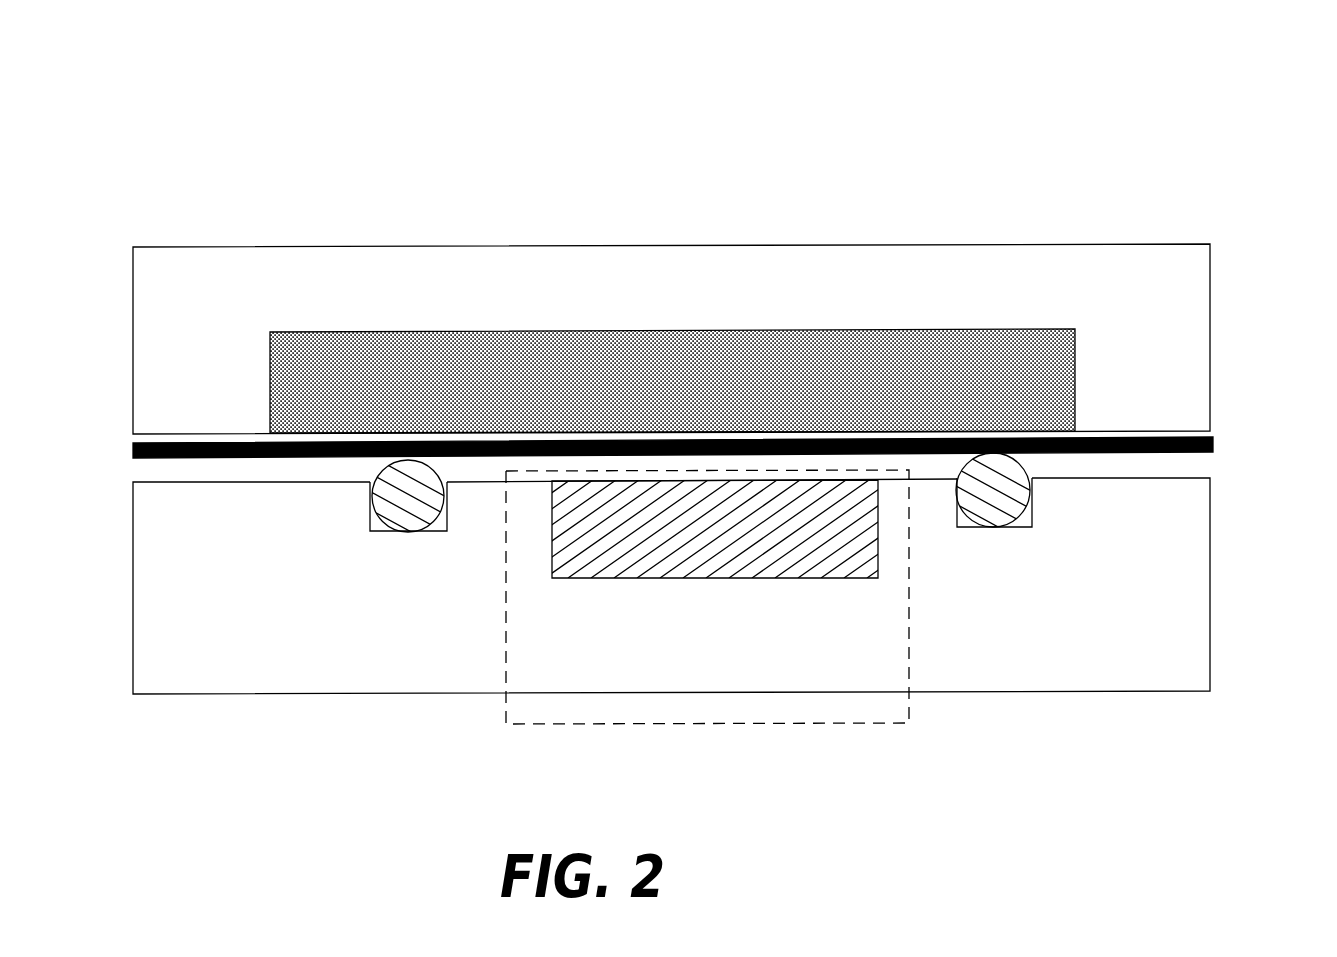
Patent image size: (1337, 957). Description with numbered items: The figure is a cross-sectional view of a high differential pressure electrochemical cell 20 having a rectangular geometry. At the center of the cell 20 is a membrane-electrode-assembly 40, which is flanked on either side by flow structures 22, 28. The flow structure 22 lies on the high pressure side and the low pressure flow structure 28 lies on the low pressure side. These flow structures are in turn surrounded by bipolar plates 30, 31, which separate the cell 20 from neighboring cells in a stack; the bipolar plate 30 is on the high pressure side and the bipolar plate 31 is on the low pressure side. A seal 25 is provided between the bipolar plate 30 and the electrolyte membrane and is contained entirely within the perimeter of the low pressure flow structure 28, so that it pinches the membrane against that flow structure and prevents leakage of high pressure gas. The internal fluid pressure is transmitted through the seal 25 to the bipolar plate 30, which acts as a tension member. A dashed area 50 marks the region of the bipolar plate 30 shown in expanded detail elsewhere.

The electrochemical cell 20 is at (1067, 110).
The flow structure 22 is at (617, 560).
The seal 25 is at (397, 520).
The low pressure flow structure 28 is at (645, 347).
The bipolar plate 30 is at (1127, 657).
The bipolar plate 31 is at (1170, 285).
The membrane-electrode-assembly 40 is at (1213, 440).
The area 50 is at (909, 724).